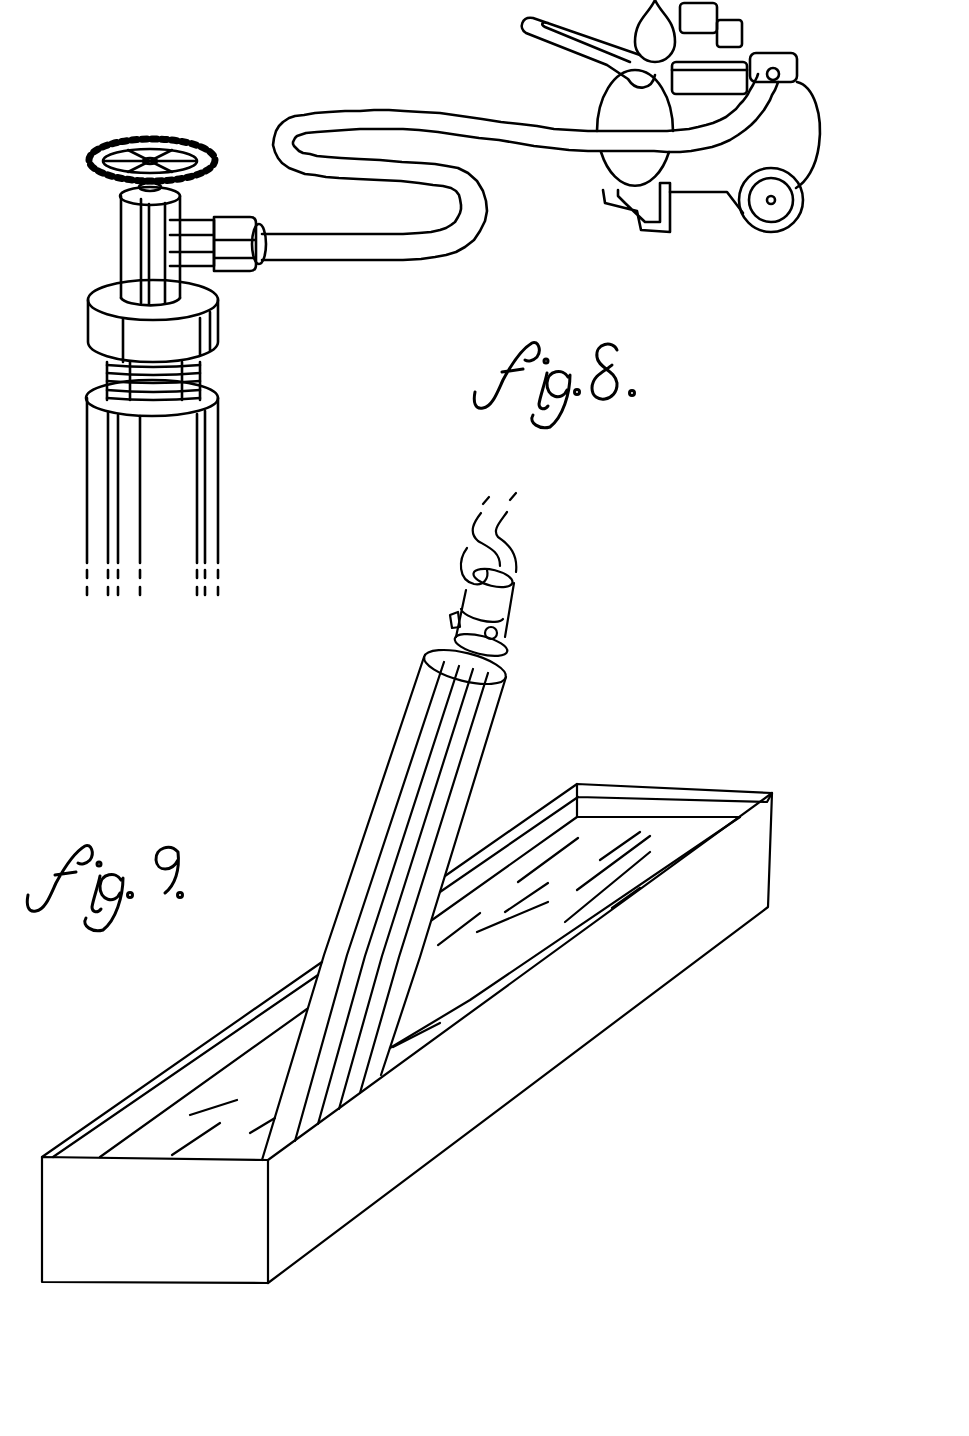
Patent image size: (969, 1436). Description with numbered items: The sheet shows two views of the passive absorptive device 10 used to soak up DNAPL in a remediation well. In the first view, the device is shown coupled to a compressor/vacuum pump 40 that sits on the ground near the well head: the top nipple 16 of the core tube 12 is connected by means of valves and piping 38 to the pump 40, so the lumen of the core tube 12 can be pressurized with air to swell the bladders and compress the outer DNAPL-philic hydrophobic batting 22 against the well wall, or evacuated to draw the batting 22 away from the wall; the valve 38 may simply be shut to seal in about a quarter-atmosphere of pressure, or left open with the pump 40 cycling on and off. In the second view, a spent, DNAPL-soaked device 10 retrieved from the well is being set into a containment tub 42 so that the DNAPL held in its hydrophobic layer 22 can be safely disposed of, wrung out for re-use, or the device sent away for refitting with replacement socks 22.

In FIG. 8, the valve 38 is at (120, 236).
In FIG. 8, the top nipple 16 is at (204, 364).
In FIG. 8, the core tube 12 is at (219, 497).
In FIG. 8, the compressor/vacuum pump 40 is at (813, 100).
In FIG. 9, the passive absorptive device 10 is at (397, 826).
In FIG. 9, the DNAPL-philic hydrophobic layer 22 is at (478, 768).
In FIG. 9, the containment tub 42 is at (580, 1050).